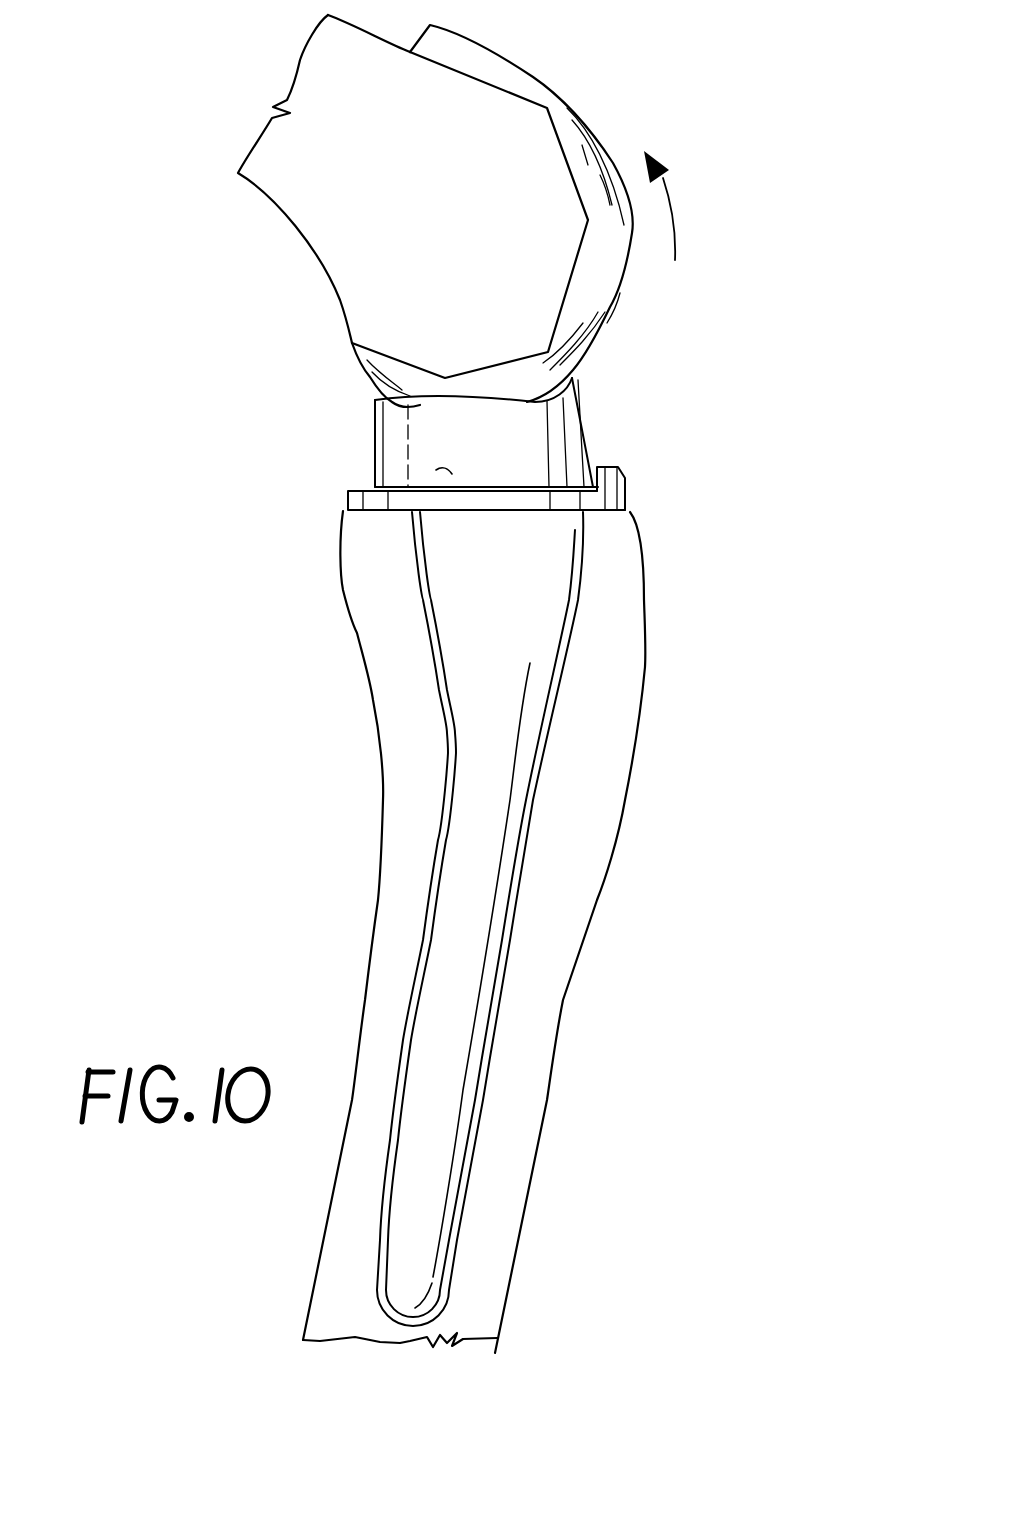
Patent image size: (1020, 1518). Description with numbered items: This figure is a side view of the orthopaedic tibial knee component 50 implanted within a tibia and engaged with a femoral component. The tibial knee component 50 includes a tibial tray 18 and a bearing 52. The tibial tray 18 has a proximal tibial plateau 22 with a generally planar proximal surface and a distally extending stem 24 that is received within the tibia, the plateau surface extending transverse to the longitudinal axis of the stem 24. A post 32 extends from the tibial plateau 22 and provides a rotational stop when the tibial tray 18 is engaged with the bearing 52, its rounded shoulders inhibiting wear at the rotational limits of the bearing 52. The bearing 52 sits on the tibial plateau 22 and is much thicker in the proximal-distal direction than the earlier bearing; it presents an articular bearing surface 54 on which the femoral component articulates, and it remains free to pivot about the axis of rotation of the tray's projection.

The tibial tray 18 is at (332, 505).
The tibial plateau 22 is at (445, 467).
The stem 24 is at (470, 950).
The post 32 is at (625, 495).
The tibial knee component 50 is at (736, 384).
The bearing 52 is at (360, 442).
The articular bearing surface 54 is at (572, 379).